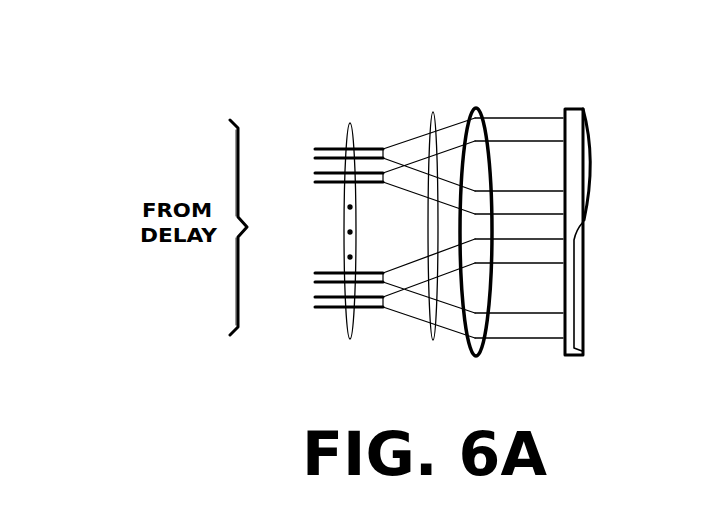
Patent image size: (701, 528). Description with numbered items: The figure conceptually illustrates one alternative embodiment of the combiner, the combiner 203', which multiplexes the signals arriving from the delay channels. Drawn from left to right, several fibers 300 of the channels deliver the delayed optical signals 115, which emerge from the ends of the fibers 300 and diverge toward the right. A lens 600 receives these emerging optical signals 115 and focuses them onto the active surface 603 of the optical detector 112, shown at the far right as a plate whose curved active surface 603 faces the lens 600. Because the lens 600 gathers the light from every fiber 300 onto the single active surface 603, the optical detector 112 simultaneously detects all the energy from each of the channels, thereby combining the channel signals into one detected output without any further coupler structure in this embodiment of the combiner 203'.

The combiner 203' is at (306, 15).
The fibers 300 is at (331, 147).
The optical signals 115 is at (430, 112).
The lens 600 is at (477, 111).
The active surface 603 is at (563, 110).
The optical detector 112 is at (565, 357).